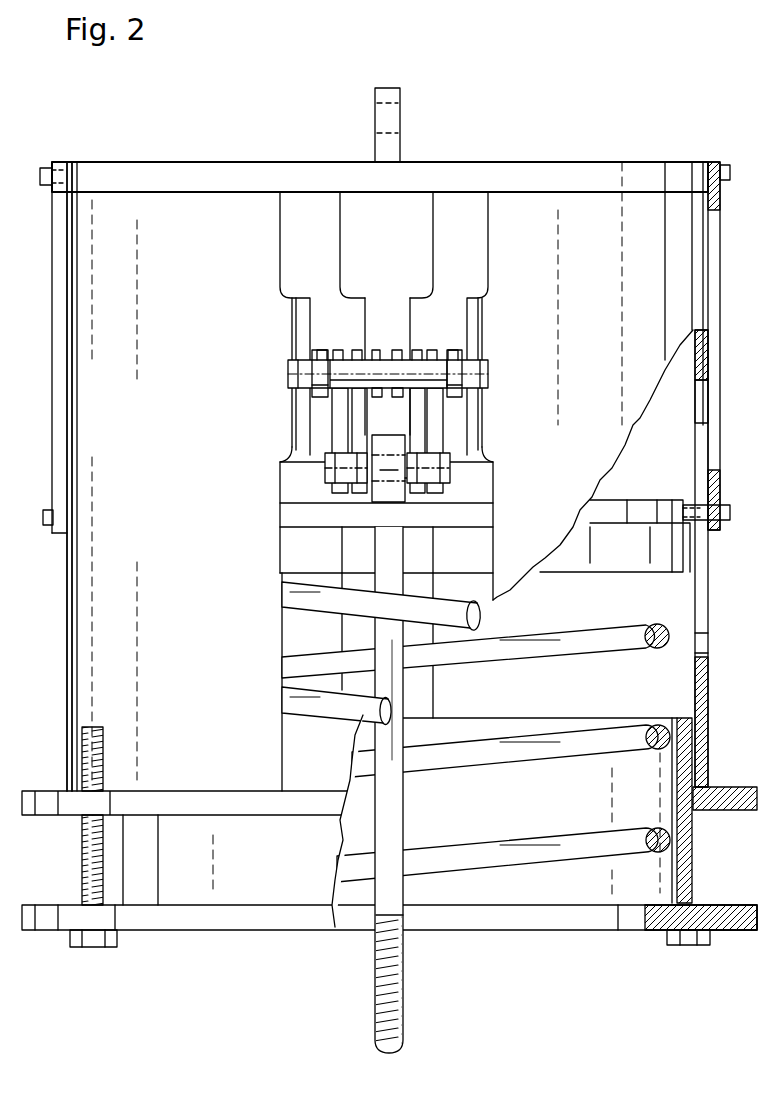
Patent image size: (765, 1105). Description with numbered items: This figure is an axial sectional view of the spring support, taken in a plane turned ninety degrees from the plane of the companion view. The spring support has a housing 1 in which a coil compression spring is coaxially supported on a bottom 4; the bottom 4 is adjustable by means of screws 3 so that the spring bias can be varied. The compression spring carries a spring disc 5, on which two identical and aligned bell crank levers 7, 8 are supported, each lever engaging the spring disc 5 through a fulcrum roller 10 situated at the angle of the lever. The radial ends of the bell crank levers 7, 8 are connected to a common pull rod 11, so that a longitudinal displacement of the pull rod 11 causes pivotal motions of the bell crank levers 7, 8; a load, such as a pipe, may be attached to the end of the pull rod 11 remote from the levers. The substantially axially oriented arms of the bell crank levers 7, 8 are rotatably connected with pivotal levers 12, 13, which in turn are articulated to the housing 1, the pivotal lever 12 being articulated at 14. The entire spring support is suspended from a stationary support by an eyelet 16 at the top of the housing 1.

The housing 1 is at (199, 598).
The screws 3 is at (108, 940).
The bottom 4 is at (750, 920).
The spring disc 5 is at (643, 508).
The bell crank lever 7 is at (340, 413).
The bell crank lever 8 is at (358, 462).
The fulcrum roller 10 is at (396, 488).
The pull rod 11 is at (398, 1002).
The pivotal lever 12 is at (317, 348).
The pivotal lever 13 is at (398, 352).
The articulation 14 is at (490, 372).
The eyelet 16 is at (401, 89).